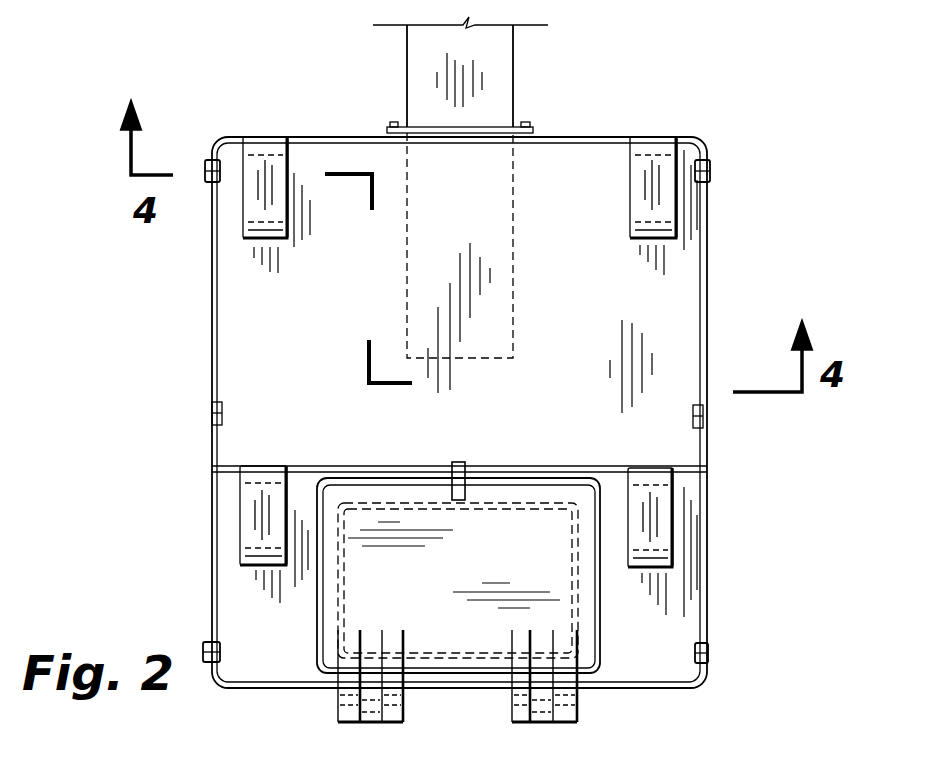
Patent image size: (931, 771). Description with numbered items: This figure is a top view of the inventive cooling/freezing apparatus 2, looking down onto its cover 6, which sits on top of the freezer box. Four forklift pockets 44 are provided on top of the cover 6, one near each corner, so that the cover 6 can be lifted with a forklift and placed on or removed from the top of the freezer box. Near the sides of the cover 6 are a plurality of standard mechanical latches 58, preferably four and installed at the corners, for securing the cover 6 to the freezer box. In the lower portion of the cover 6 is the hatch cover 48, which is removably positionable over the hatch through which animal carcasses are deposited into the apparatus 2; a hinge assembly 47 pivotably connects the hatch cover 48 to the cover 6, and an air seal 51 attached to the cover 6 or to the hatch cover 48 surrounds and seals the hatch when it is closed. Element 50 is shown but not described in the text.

The freezing apparatus 2 is at (603, 106).
The cover 6 is at (232, 363).
The forklift pockets 44 is at (250, 207).
The hinge assembly 47 is at (512, 717).
The hatch cover 48 is at (518, 530).
The conduit 50 is at (417, 127).
The air seal 51 is at (403, 503).
The mechanical latches 58 is at (207, 168).